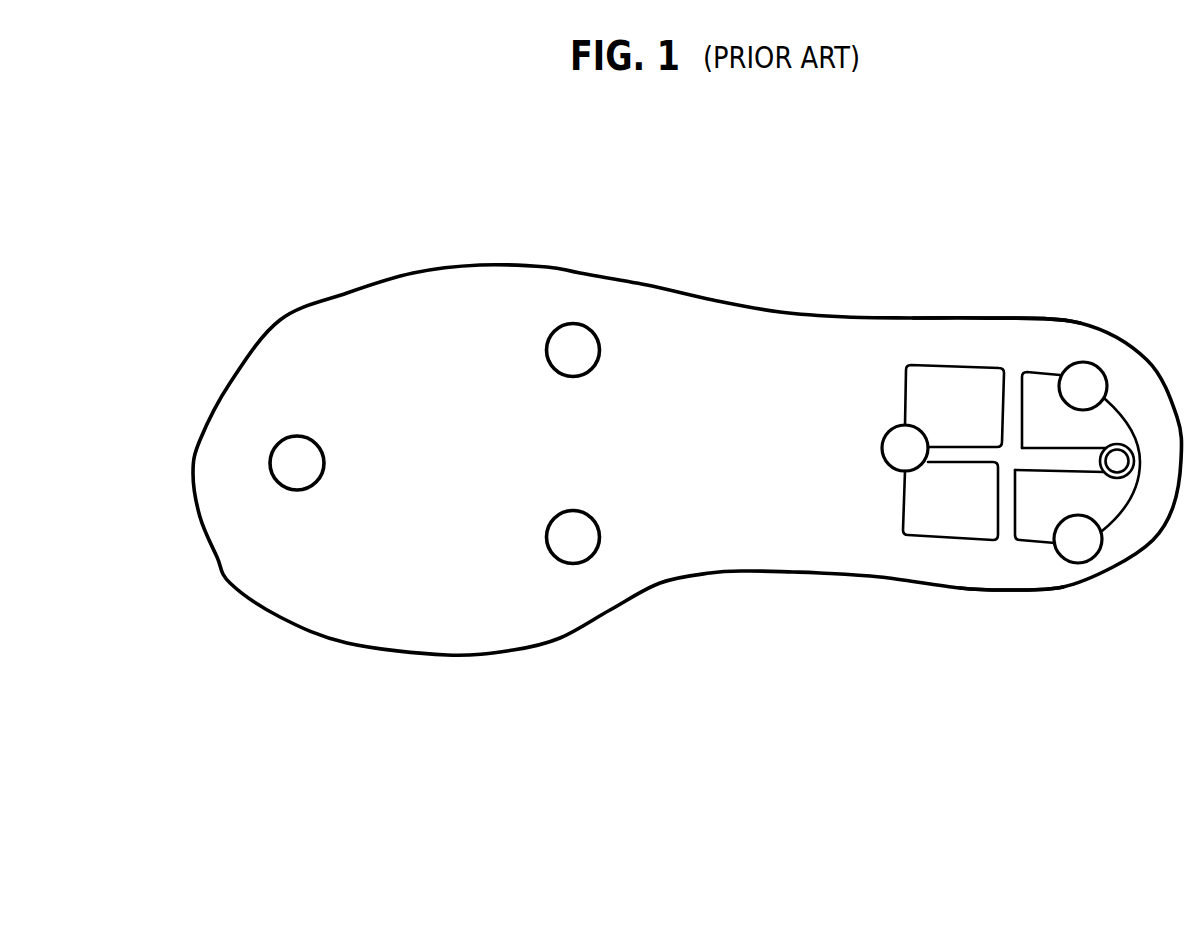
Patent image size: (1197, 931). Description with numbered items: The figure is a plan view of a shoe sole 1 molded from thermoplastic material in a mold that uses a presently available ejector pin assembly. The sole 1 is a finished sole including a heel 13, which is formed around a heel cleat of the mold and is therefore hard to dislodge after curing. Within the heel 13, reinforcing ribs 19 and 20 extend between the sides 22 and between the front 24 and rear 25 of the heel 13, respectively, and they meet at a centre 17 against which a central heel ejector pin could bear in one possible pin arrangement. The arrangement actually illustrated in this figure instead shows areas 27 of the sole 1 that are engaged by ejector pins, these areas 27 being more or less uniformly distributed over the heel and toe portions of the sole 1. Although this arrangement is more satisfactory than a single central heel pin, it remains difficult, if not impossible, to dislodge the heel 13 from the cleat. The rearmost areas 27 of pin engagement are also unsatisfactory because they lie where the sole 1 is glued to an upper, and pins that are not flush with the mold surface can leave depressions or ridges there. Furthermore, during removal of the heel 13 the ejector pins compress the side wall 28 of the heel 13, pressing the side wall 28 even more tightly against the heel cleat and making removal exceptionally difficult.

The shoe sole 1 is at (710, 560).
The heel 13 is at (976, 331).
The centre of reinforcing ribs 17 is at (1008, 447).
The reinforcing rib 19 is at (1006, 502).
The reinforcing rib 20 is at (947, 457).
The sides of the heel 22 is at (942, 366).
The front of the heel 24 is at (907, 512).
The rear of the heel 25 is at (1130, 490).
The areas engaged by the pins 27 is at (317, 458).
The side wall of the heel 28 is at (1010, 583).